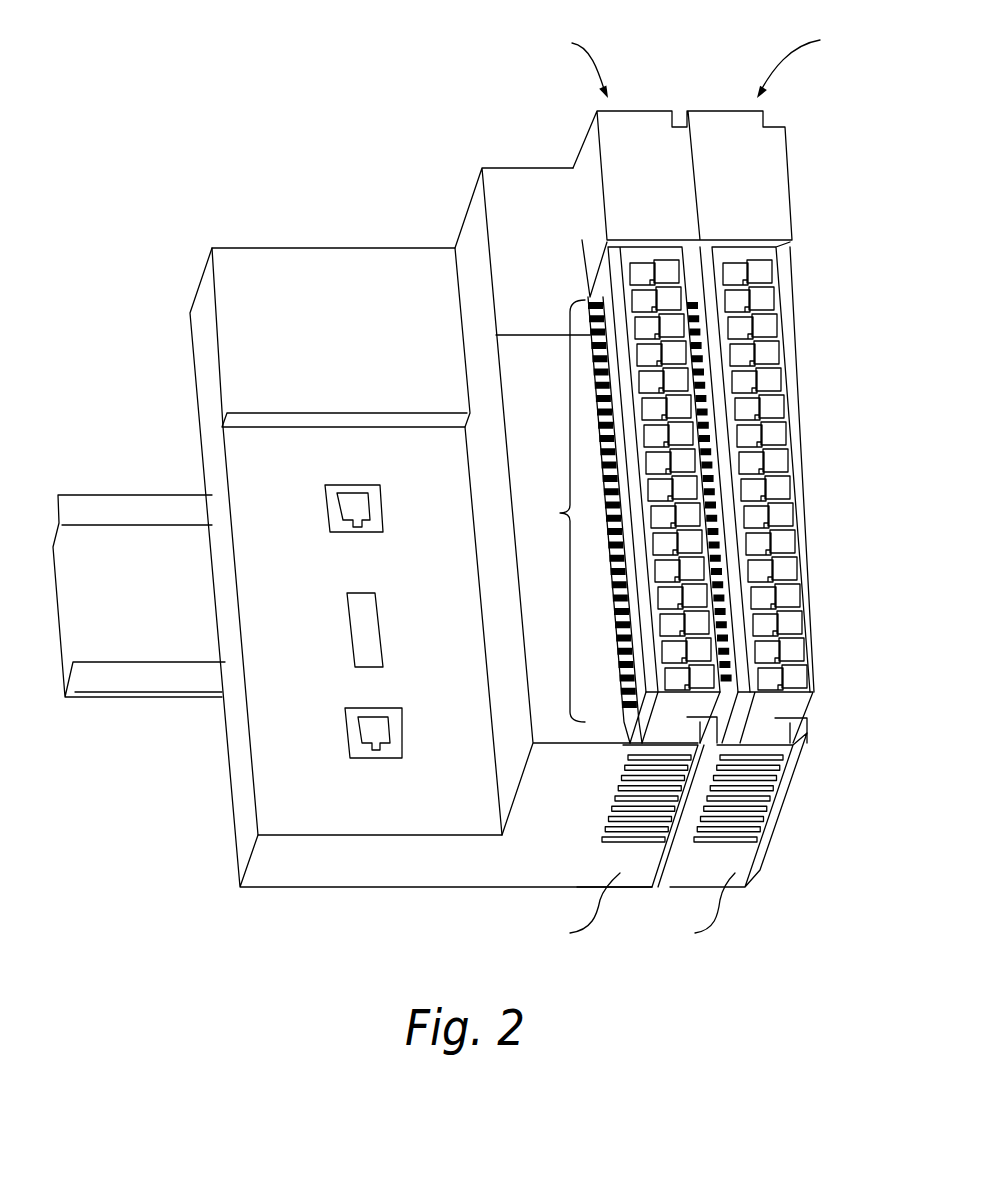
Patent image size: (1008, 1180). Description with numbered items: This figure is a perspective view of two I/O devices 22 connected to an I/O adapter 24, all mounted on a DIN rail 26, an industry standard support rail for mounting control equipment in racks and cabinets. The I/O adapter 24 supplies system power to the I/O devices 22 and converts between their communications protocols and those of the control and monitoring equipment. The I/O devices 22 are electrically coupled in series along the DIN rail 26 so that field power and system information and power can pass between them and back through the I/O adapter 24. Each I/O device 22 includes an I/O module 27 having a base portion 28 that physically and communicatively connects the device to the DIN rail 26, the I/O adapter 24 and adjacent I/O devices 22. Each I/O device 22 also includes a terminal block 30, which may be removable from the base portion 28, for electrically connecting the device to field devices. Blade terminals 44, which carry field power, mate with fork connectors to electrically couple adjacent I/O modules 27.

The I/O device 22 is at (711, 504).
The I/O adapter 24 is at (312, 297).
The DIN rail 26 is at (122, 572).
The I/O module 27 is at (738, 168).
The base portion 28 is at (640, 860).
The terminal block 30 is at (793, 735).
The blade terminals 44 is at (713, 560).